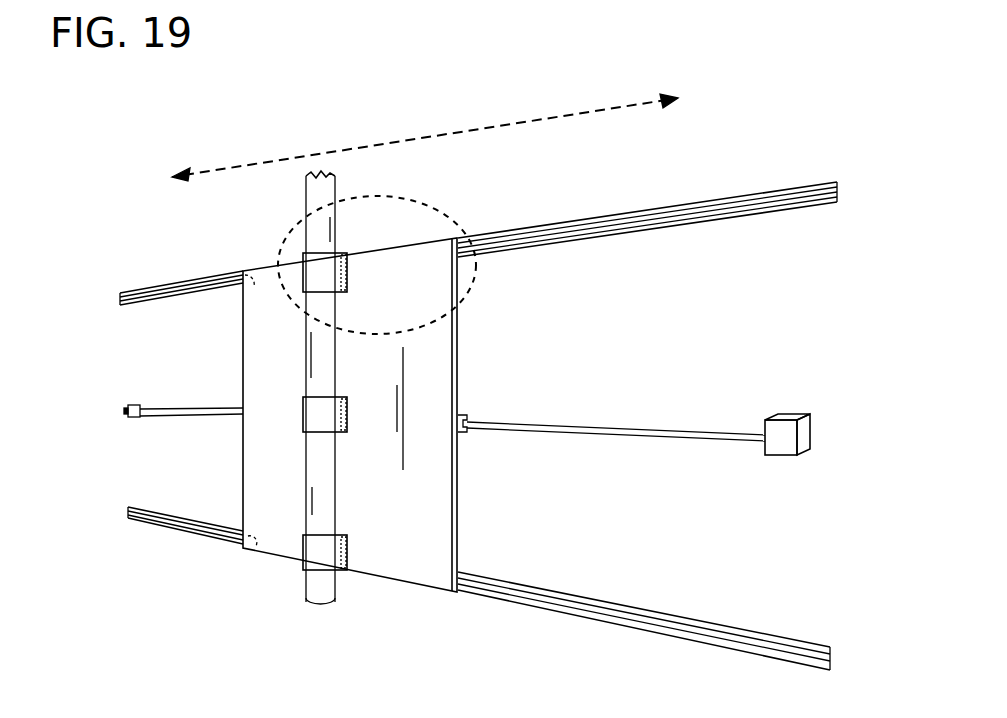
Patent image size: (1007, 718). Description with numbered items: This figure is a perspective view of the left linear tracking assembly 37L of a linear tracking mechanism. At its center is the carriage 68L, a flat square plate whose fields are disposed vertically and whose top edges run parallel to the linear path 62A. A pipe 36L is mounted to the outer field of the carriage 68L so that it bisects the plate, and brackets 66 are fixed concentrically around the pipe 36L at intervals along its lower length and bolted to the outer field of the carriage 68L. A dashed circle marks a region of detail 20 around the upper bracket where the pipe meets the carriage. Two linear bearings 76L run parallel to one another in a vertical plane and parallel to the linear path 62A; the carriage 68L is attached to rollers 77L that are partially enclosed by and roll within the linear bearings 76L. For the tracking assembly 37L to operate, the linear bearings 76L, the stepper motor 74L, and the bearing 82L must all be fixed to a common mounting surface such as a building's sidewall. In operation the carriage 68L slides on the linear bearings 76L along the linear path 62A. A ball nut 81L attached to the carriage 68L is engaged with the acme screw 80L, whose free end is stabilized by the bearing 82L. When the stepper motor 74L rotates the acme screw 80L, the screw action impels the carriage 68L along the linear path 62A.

The linear path 62A is at (370, 148).
The linear tracking assembly 37L is at (165, 246).
The pipe 36L is at (322, 193).
The detail region 20 is at (453, 209).
The carriage 68L is at (430, 530).
The brackets 66 is at (330, 280).
The linear bearings 76L is at (173, 298).
The rollers 77L is at (242, 295).
The bearing 82L is at (134, 403).
The ball nut 81L is at (466, 414).
The acme screw 80L is at (592, 423).
The stepper motor 74L is at (790, 418).